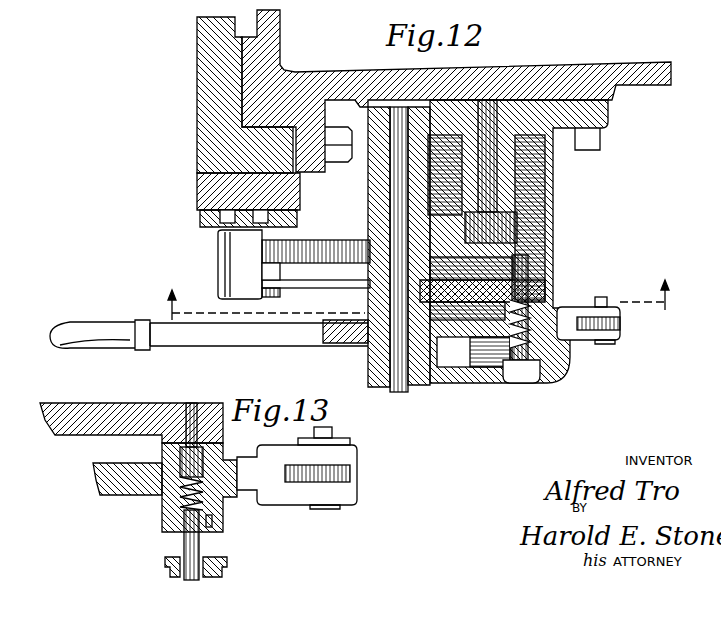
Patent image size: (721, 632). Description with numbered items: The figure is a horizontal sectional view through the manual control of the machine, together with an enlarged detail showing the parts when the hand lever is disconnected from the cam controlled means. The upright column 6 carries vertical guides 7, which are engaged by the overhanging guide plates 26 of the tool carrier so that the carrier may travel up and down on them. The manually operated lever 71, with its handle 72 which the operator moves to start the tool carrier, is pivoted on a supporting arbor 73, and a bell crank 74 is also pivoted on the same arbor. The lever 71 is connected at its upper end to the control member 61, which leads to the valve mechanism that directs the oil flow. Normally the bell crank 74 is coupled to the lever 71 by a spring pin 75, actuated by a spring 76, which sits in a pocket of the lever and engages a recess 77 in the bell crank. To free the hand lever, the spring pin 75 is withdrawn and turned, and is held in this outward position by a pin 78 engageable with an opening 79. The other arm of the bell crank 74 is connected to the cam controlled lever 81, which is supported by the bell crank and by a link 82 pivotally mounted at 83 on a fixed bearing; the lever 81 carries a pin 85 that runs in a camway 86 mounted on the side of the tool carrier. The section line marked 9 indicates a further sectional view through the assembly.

In FIG. 12, the column 6 is at (654, 62).
In FIG. 12, the vertical guides 7 is at (341, 108).
In FIG. 12, the overhanging guide plates 26 is at (312, 165).
In FIG. 12, the camway 86 is at (268, 220).
In FIG. 12, the pin 85 is at (222, 236).
In FIG. 12, the lever 81 is at (338, 248).
In FIG. 12, the pivot on fixed bearing 83 is at (520, 192).
In FIG. 12, the link 82 is at (520, 224).
In FIG. 12, the bell crank 74 is at (545, 282).
In FIG. 13, the bell crank 74 is at (112, 412).
In FIG. 12, the recess 77 is at (540, 296).
In FIG. 13, the recess 77 is at (190, 405).
In FIG. 12, the spring pin 75 is at (560, 368).
In FIG. 13, the spring pin 75 is at (215, 540).
In FIG. 12, the supporting arbor 73 is at (400, 388).
In FIG. 12, the manually operated lever 71 is at (242, 340).
In FIG. 13, the manually operated lever 71 is at (95, 486).
In FIG. 12, the handle 72 is at (66, 330).
In FIG. 12, the live center 9 is at (426, 297).
In FIG. 12, the control member 61 is at (588, 320).
In FIG. 13, the control member 61 is at (352, 478).
In FIG. 13, the spring 76 is at (182, 512).
In FIG. 13, the opening 79 is at (210, 520).
In FIG. 13, the pin 78 is at (175, 555).